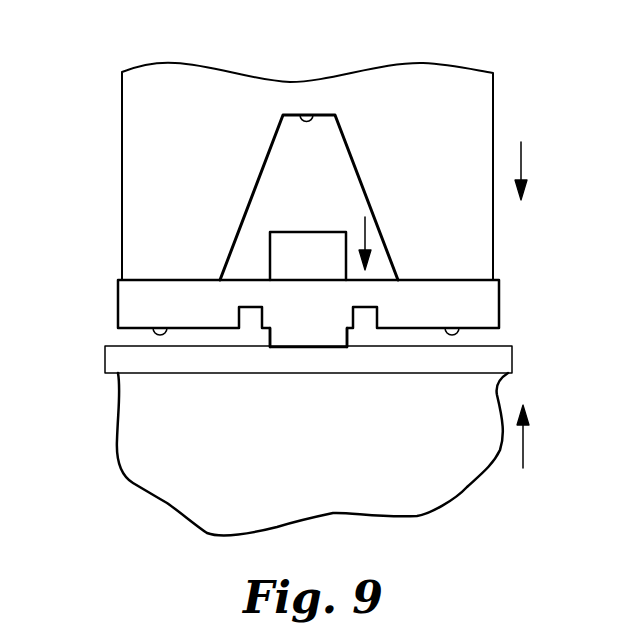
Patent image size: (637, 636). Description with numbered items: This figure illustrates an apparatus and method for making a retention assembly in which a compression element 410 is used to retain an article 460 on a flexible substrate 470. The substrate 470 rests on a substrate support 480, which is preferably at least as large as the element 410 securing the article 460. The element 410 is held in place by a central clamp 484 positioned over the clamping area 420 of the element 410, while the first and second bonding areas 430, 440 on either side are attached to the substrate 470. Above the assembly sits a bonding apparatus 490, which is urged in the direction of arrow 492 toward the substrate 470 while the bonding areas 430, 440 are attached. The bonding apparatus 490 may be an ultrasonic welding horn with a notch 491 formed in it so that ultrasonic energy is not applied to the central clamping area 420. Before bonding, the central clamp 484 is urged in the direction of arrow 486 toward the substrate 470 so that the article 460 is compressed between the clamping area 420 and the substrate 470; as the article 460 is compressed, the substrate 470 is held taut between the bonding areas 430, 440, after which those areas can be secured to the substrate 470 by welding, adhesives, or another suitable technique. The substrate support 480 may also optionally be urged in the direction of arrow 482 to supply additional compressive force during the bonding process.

The compression element 410 is at (510, 305).
The clamping area 420 is at (166, 328).
The first bonding area 430 is at (288, 348).
The second bonding area 440 is at (455, 328).
The article 460 is at (333, 348).
The substrate 470 is at (112, 361).
The substrate support 480 is at (300, 512).
The arrow 482 is at (523, 447).
The central clamp 484 is at (300, 242).
The arrow 486 is at (367, 237).
The bonding apparatus 490 is at (459, 80).
The notch 491 is at (313, 118).
The arrow 492 is at (521, 158).